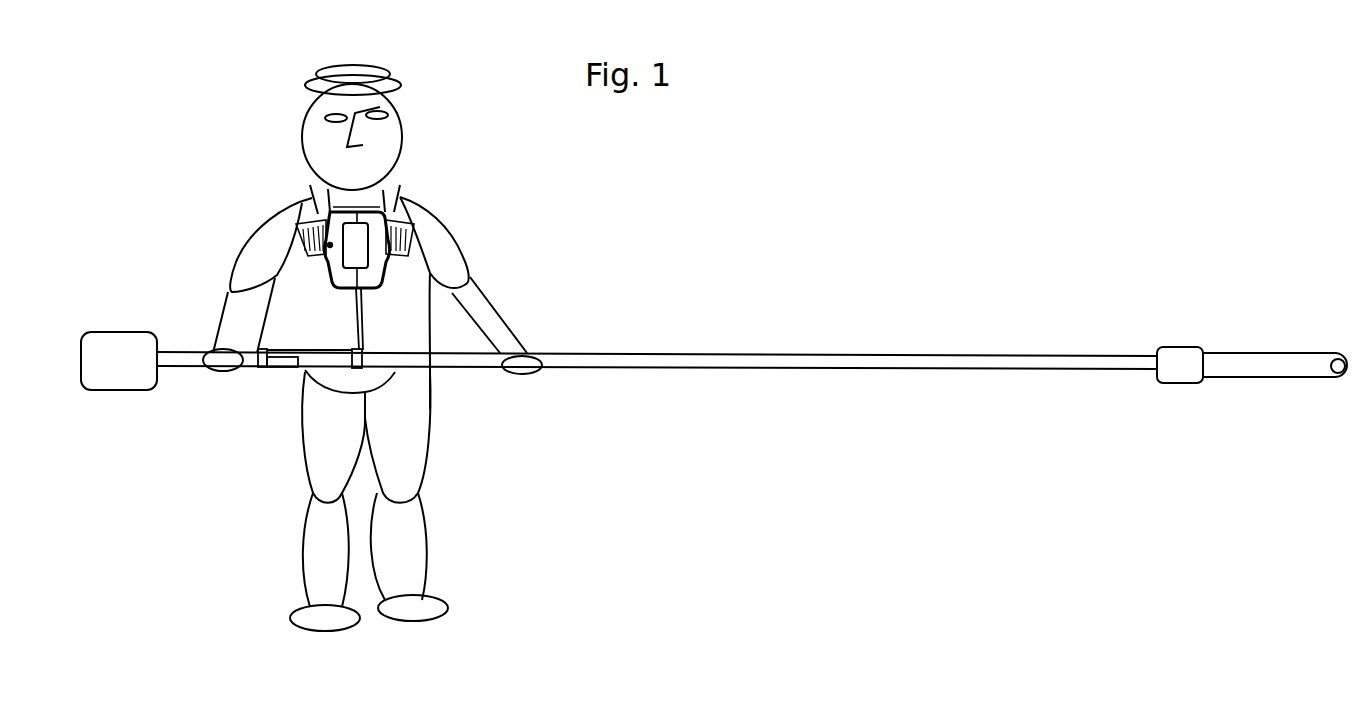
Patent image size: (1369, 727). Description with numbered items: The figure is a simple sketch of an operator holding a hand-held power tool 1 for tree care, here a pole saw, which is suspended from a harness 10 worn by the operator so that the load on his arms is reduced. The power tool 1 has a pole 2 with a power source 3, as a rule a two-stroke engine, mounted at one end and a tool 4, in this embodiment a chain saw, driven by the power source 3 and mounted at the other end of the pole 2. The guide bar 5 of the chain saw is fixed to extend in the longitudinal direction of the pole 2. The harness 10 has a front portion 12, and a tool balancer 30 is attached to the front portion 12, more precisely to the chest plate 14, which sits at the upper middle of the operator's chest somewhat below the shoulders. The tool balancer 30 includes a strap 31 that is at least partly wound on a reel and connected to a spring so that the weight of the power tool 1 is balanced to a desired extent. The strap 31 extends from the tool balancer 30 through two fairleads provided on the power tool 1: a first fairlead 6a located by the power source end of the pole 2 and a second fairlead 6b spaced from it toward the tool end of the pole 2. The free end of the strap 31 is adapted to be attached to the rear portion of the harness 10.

The power tool 1 is at (772, 353).
The pole 2 is at (908, 370).
The power source 3 is at (127, 380).
The tool 4 is at (1182, 360).
The guide bar 5 is at (1290, 368).
The first fairlead 6a is at (263, 367).
The second fairlead 6b is at (365, 366).
The harness 10 is at (392, 184).
The front portion 12 is at (311, 278).
The chest plate 14 is at (293, 237).
The tool balancer 30 is at (378, 280).
The strap 31 is at (267, 320).